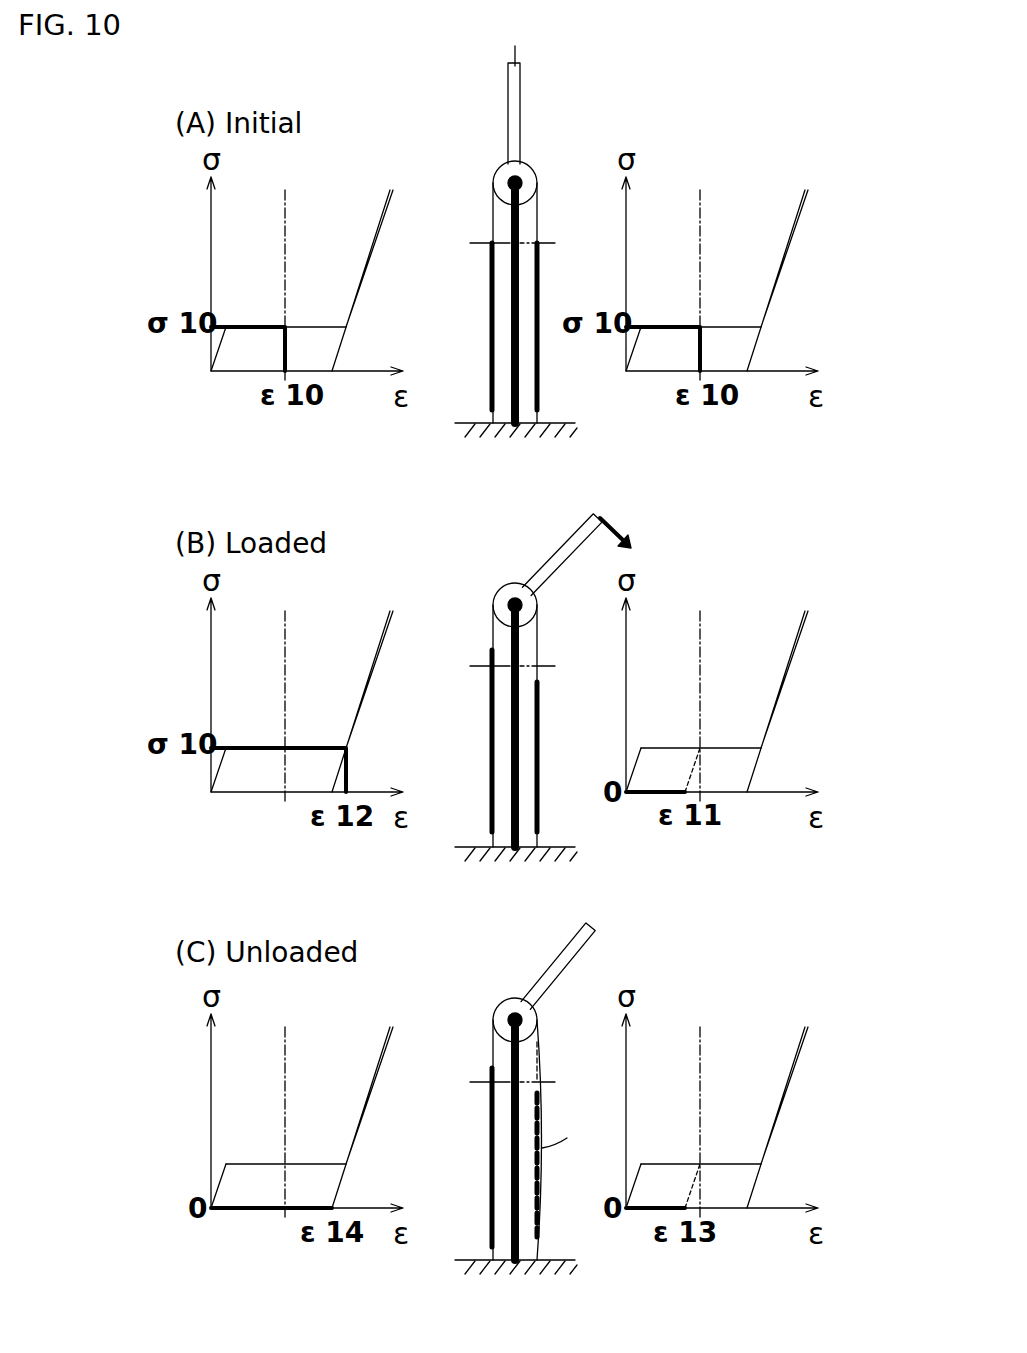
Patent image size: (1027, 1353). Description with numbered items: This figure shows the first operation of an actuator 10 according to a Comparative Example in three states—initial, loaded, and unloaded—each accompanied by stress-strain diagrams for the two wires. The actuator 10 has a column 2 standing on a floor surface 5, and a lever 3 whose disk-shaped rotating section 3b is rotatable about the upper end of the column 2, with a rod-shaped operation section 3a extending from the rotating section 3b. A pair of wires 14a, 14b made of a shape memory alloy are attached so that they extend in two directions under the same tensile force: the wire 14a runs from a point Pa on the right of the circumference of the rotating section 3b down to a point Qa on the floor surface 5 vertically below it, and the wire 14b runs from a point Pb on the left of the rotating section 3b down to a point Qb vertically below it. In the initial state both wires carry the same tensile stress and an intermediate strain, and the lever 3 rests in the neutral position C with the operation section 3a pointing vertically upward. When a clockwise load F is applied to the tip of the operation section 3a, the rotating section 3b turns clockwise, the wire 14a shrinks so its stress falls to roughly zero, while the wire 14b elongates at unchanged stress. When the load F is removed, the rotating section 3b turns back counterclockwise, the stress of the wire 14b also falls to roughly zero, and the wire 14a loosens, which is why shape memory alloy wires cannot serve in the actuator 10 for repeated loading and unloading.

The actuator 10 is at (422, 89).
The column 2 is at (518, 225).
The lever 3 is at (577, 102).
The operation section 3a is at (520, 117).
The rotating section 3b is at (525, 168).
The floor surface 5 is at (574, 423).
The wire 14a is at (540, 271).
The wire 14b is at (490, 281).
The neutral position C is at (518, 57).
The point Pa is at (534, 183).
The point Pb is at (492, 183).
The point Qa is at (537, 423).
The point Qb is at (492, 423).
The load F is at (626, 539).